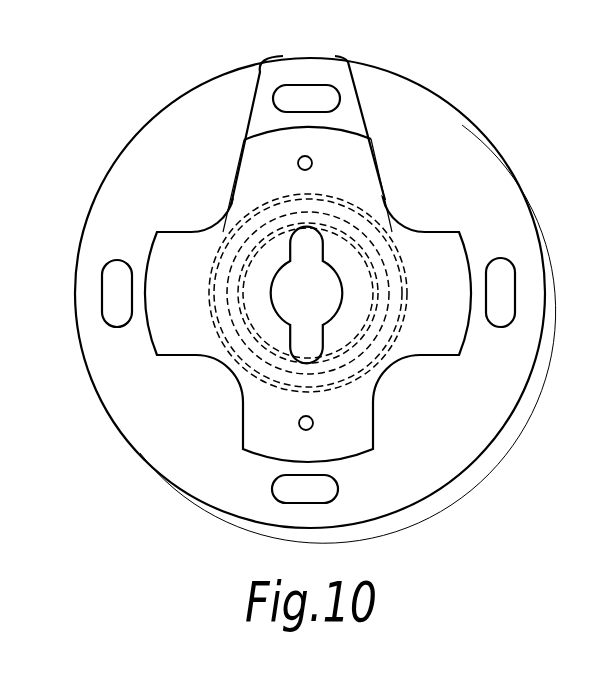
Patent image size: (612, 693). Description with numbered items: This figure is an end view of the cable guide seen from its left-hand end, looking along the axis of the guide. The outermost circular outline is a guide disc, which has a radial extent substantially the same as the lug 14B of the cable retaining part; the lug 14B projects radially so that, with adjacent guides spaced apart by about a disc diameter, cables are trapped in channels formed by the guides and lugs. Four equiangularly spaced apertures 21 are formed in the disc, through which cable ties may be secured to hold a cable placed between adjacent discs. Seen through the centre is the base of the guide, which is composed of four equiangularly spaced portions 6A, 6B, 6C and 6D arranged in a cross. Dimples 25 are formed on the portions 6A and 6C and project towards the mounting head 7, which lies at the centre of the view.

The lug 14B is at (347, 80).
The base portion 6A is at (340, 170).
The base portion 6B is at (453, 270).
The base portion 6C is at (343, 425).
The base portion 6D is at (172, 333).
The mounting head 7 is at (315, 306).
The dimples 25 is at (298, 163).
The apertures 21 is at (113, 280).